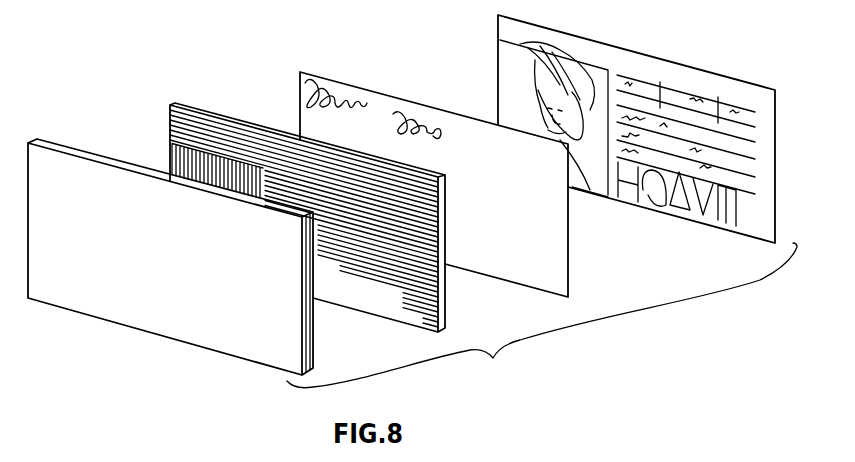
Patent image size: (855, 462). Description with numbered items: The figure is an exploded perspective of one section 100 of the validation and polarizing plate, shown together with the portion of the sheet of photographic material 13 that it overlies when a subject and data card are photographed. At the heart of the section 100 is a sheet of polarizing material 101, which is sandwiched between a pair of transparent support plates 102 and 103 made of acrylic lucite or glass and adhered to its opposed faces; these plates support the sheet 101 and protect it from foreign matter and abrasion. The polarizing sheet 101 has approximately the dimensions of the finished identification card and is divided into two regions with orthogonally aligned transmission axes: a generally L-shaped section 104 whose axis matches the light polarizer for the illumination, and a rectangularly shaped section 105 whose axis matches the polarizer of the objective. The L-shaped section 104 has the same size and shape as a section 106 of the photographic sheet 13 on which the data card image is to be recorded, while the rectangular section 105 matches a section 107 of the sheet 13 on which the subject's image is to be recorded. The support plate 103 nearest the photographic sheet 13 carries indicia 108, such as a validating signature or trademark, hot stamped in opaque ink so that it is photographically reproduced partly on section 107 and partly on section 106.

The section of the polarizing plate 100 is at (542, 315).
The sheet of polarizing material 101 is at (279, 207).
The transparent support plate 102 is at (210, 337).
The transparent support plate 103 is at (410, 176).
The L-shaped section 104 is at (397, 308).
The rectangularly shaped section 105 is at (172, 150).
The section of the photographic sheet 106 is at (763, 217).
The section of the photographic sheet 107 is at (507, 72).
The indicia 108 is at (303, 83).
The sheet of photographic material 13 is at (626, 129).